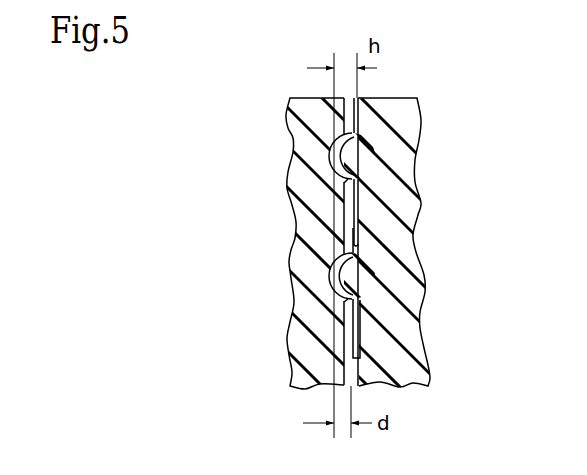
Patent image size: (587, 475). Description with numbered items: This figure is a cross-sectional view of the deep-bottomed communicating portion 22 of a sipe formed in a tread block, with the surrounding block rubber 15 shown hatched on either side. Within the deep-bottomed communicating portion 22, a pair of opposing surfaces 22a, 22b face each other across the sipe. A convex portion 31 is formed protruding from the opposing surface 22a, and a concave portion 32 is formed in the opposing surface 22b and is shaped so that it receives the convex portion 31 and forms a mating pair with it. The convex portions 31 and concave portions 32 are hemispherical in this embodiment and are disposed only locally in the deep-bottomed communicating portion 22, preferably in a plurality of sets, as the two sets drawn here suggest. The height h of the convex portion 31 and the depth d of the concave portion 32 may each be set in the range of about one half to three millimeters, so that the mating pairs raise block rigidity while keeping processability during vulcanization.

The body with slot 15 is at (402, 106).
The deep-bottomed communicating portion 22 is at (357, 231).
The opposing surface 22a is at (359, 221).
The opposing surface 22b is at (352, 233).
The convex portion 31 is at (345, 157).
The concave portion 32 is at (343, 181).